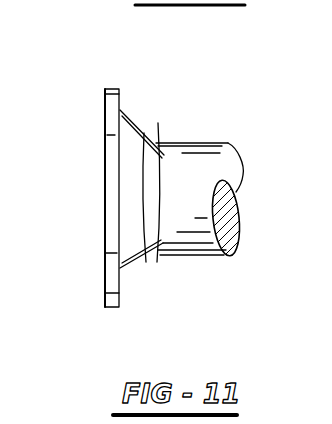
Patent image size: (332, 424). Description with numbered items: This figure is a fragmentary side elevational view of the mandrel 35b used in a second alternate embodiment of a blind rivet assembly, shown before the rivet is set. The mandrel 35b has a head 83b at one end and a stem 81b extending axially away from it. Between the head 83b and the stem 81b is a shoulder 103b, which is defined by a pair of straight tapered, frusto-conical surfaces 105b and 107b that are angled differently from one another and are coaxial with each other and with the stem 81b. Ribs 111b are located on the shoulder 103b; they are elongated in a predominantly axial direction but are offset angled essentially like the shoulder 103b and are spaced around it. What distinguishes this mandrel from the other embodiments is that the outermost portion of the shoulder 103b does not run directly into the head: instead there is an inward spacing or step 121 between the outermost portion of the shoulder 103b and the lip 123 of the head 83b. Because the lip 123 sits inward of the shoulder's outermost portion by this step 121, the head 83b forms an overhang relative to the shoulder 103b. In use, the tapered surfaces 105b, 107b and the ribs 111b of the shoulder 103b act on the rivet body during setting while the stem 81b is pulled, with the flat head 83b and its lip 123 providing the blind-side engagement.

The mandrel 35b is at (256, 115).
The head 83b is at (105, 183).
The inward spacing or step 121 is at (121, 112).
The lip 123 is at (114, 268).
The tapering surface 105b is at (137, 121).
The tapering surface 107b is at (163, 124).
The ribs 111b is at (148, 255).
The shoulder 103b is at (126, 260).
The stem 81b is at (220, 173).